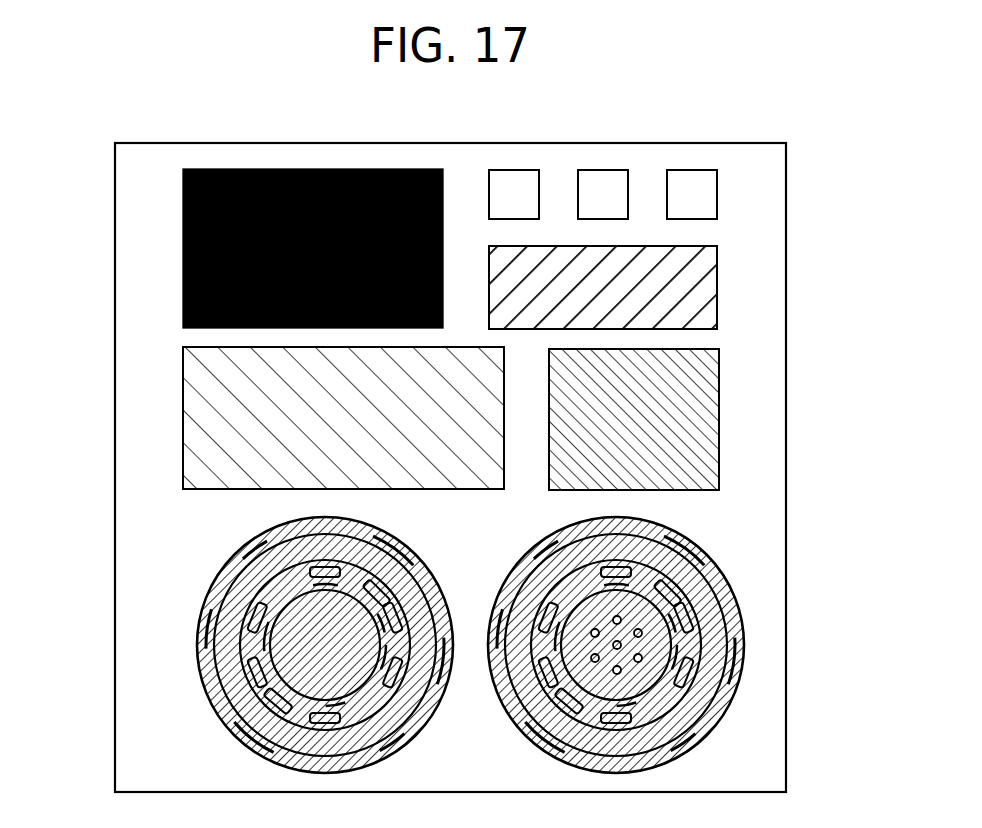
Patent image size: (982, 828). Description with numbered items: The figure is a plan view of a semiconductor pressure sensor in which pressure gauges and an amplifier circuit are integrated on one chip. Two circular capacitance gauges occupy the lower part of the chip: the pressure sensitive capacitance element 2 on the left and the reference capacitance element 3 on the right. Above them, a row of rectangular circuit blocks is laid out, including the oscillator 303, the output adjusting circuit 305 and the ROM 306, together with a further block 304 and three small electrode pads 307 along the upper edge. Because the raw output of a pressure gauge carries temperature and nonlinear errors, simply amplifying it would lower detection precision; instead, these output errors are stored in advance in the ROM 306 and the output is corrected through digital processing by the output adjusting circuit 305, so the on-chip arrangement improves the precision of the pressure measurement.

The pressure sensitive capacitance element 2 is at (210, 641).
The reference capacitance element 3 is at (735, 630).
The oscillator 303 is at (707, 417).
The hatched region / chip area 304 is at (197, 423).
The output adjusting circuit 305 is at (183, 247).
The ROM 306 is at (705, 283).
The electrode pads 307 is at (705, 200).